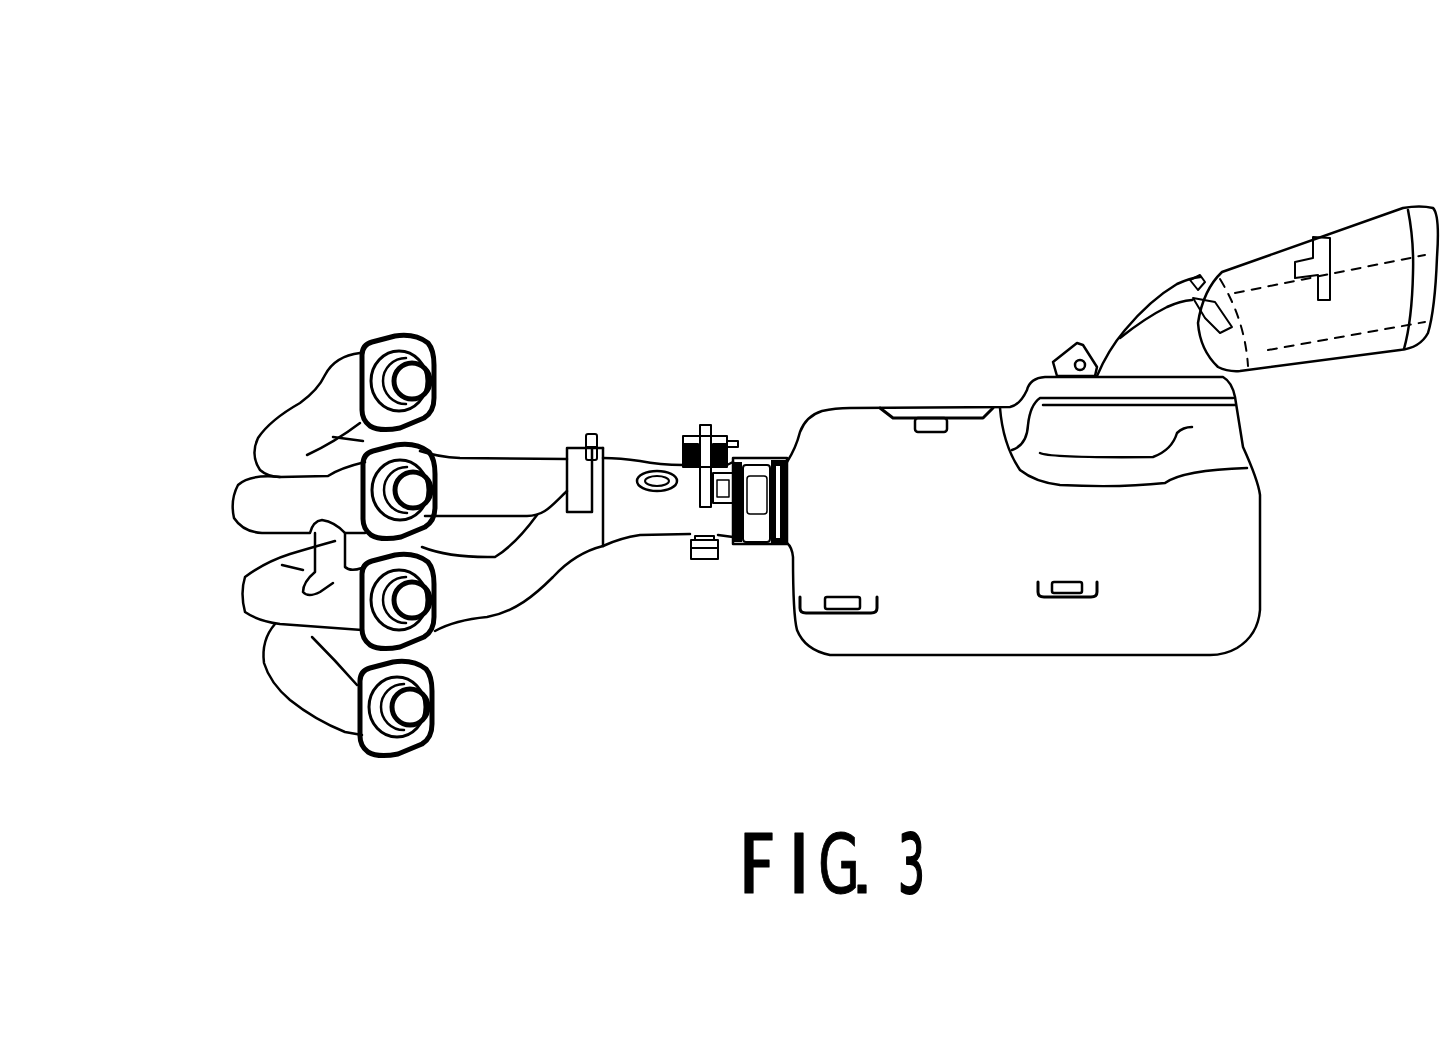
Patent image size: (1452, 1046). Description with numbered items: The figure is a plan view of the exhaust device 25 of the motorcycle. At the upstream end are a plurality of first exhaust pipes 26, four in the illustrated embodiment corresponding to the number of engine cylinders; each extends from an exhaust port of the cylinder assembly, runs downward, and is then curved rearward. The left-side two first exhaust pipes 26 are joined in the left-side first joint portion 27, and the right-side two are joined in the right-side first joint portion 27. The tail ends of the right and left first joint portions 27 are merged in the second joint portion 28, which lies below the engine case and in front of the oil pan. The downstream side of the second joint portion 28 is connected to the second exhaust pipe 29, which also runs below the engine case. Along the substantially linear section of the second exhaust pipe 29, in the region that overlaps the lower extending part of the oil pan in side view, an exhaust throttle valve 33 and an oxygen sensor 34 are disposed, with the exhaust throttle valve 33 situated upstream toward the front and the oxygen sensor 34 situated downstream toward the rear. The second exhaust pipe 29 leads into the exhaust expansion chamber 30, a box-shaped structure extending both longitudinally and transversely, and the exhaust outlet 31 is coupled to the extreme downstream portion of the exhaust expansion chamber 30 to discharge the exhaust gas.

The exhaust device 25 is at (838, 218).
The first exhaust pipes 26 is at (255, 455).
The first joint portions 27 is at (453, 468).
The second joint portion 28 is at (634, 527).
The second exhaust pipe 29 is at (710, 527).
The exhaust expansion chamber 30 is at (983, 637).
The exhaust outlet 31 is at (1387, 237).
The exhaust throttle valve 33 is at (697, 430).
The oxygen sensor 34 is at (735, 458).